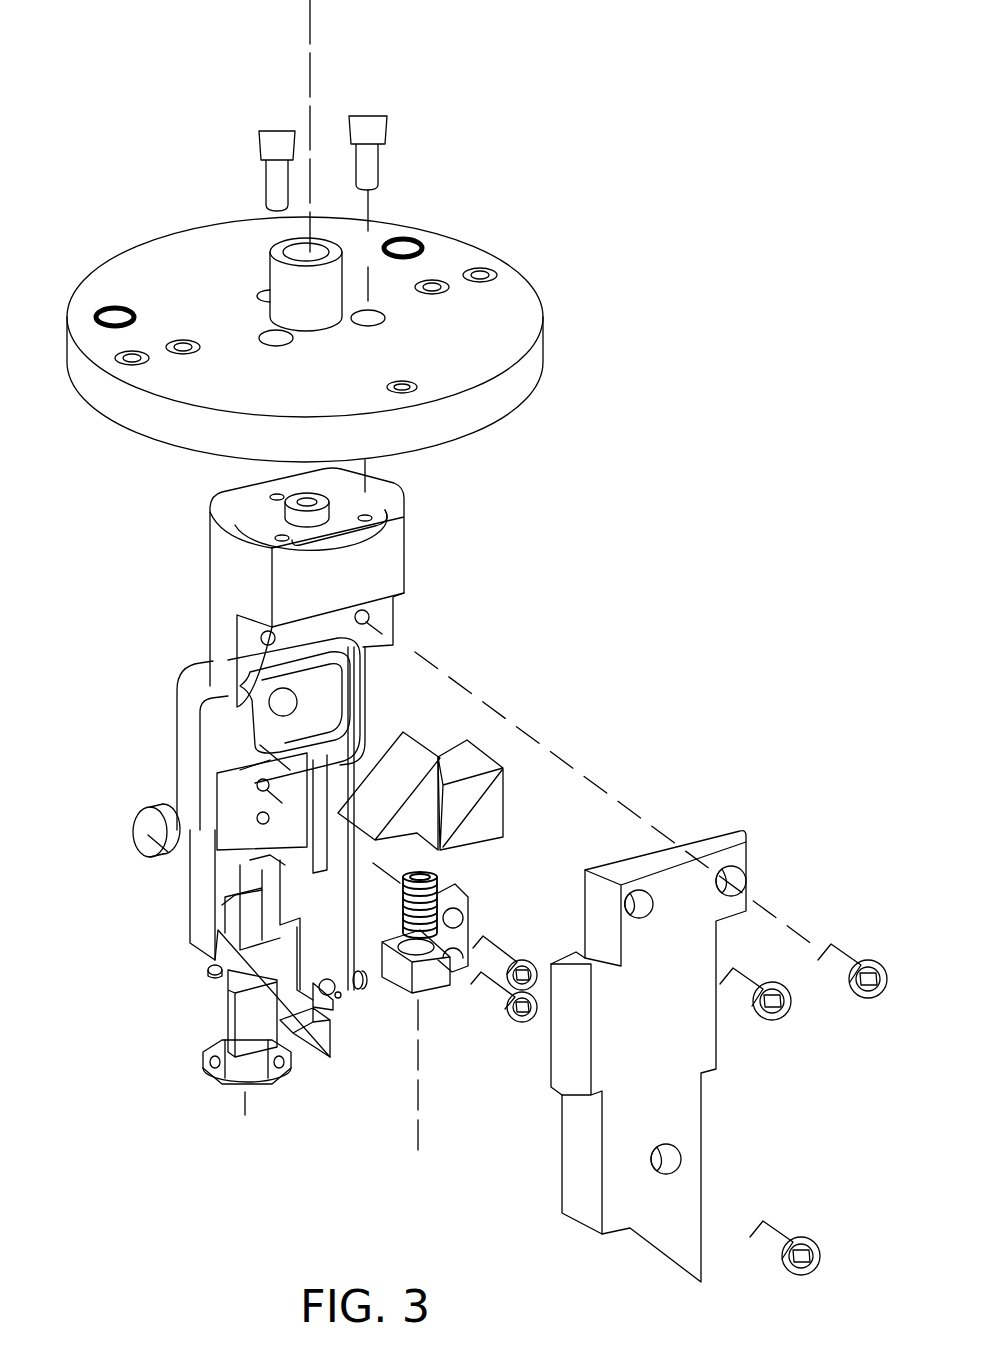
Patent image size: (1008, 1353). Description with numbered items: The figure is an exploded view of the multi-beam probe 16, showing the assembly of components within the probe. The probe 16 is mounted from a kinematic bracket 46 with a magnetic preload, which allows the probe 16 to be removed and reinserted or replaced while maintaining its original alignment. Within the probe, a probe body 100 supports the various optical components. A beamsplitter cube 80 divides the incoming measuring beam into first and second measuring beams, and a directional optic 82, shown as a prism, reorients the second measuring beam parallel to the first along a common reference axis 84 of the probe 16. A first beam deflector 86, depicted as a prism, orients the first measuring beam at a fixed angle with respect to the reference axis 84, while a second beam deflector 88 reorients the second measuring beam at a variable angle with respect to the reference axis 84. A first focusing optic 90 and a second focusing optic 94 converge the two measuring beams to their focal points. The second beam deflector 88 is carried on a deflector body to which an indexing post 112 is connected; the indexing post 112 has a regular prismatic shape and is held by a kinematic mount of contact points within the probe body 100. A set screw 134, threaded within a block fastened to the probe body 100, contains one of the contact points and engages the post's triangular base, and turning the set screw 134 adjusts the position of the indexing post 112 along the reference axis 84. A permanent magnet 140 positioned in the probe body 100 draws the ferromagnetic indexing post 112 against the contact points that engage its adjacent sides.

The multi-beam probe 16 is at (137, 610).
The kinematic bracket 46 is at (534, 362).
The beamsplitter cube 80 is at (492, 822).
The directional optic 82 is at (390, 763).
The reference axis 84 is at (311, 56).
The first beam deflector 86 is at (322, 1050).
The second beam deflector 88 is at (207, 1085).
The first focusing optic 90 is at (362, 990).
The second focusing optic 94 is at (207, 975).
The probe body 100 is at (388, 570).
The indexing post 112 is at (226, 1010).
The set screw 134 is at (440, 880).
The permanent magnet 140 is at (143, 808).